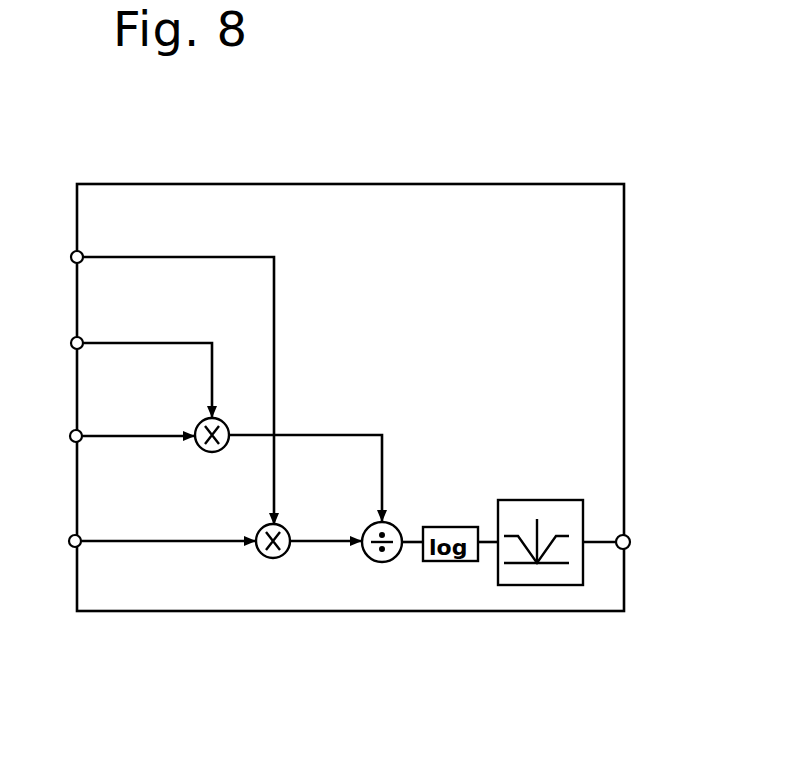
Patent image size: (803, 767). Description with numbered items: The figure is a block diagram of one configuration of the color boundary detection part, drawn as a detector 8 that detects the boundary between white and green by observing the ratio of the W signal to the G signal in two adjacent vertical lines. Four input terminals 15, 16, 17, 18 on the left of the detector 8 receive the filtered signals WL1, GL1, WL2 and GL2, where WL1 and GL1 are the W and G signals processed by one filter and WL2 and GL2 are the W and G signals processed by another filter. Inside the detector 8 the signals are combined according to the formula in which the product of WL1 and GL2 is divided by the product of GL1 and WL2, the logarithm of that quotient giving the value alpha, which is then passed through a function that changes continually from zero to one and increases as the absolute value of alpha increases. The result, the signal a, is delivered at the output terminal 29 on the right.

The detector 8 is at (305, 184).
The WL1 input terminal 15 is at (81, 535).
The GL1 input terminal 16 is at (82, 430).
The WL2 input terminal 17 is at (83, 337).
The GL2 input terminal 18 is at (83, 251).
The output terminal a 29 is at (629, 536).